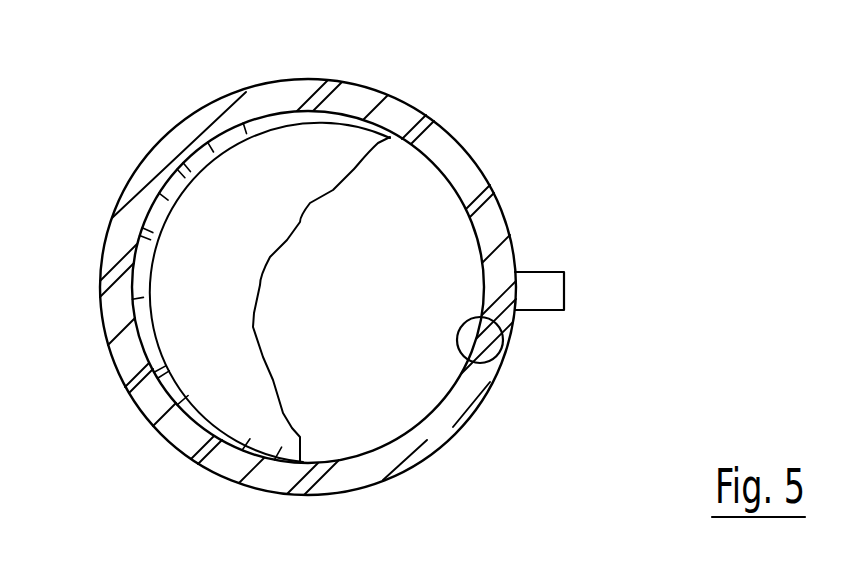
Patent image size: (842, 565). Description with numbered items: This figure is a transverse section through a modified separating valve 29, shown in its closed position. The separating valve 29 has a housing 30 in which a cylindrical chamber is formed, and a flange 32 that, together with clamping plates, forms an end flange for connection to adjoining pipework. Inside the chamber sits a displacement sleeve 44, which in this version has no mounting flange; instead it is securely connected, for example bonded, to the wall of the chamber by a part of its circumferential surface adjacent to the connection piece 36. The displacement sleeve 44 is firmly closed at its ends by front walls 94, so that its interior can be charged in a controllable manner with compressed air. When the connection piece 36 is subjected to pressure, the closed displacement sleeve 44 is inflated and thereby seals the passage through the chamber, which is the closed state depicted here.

The separating valve 29 is at (391, 287).
The housing 30 is at (512, 246).
The connection piece 36 is at (564, 291).
The flange 32 is at (497, 325).
The displacement sleeve 44 is at (385, 222).
The front walls 94 is at (190, 333).